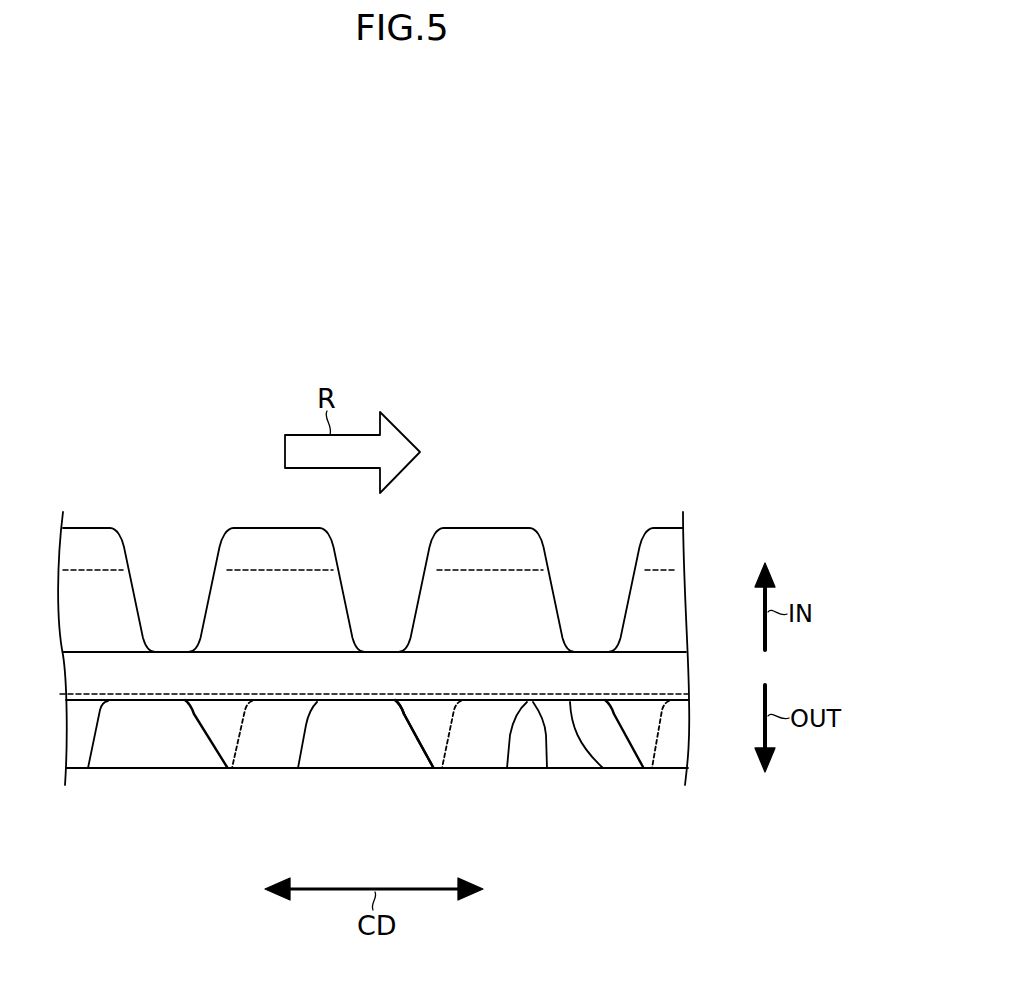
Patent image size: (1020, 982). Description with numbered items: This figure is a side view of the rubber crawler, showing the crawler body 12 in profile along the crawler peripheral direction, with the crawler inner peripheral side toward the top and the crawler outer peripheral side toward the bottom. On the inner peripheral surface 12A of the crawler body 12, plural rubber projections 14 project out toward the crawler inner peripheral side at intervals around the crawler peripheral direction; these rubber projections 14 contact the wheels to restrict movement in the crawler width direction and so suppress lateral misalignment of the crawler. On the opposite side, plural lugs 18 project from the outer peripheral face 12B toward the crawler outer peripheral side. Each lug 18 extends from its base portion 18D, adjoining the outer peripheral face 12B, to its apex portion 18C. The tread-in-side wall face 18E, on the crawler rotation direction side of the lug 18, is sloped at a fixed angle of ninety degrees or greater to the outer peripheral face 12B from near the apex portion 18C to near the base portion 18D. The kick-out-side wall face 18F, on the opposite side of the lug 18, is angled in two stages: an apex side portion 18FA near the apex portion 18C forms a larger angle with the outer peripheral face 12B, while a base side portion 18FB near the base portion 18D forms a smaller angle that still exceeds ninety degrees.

The crawler body 12 is at (660, 648).
The inner peripheral surface 12A is at (552, 650).
The outer peripheral face 12B is at (603, 768).
The rubber projection 14 is at (491, 527).
The lug 18 is at (423, 758).
The apex portion 18C is at (477, 768).
The base portion 18D is at (547, 768).
The tread-in-side wall face 18E is at (512, 739).
The kick-out-side wall face 18F is at (317, 773).
The apex side portion 18FA is at (414, 738).
The base side portion 18FB is at (400, 712).